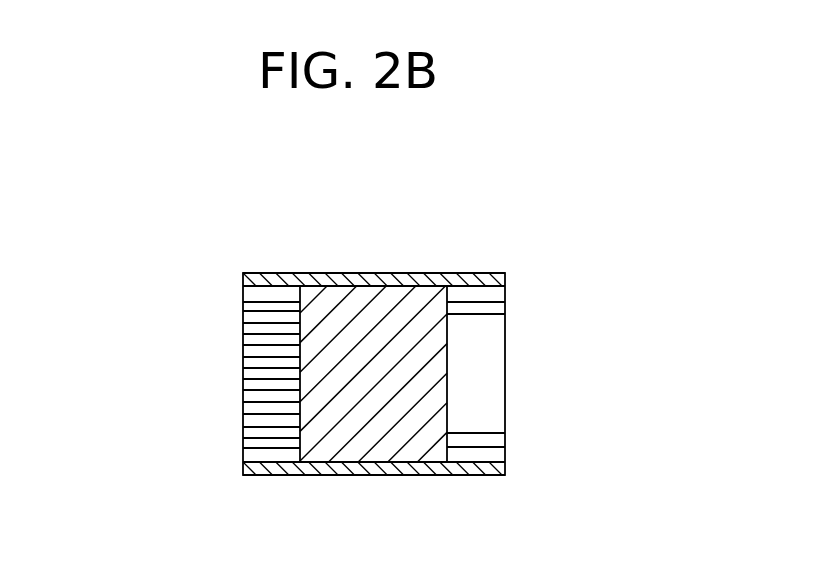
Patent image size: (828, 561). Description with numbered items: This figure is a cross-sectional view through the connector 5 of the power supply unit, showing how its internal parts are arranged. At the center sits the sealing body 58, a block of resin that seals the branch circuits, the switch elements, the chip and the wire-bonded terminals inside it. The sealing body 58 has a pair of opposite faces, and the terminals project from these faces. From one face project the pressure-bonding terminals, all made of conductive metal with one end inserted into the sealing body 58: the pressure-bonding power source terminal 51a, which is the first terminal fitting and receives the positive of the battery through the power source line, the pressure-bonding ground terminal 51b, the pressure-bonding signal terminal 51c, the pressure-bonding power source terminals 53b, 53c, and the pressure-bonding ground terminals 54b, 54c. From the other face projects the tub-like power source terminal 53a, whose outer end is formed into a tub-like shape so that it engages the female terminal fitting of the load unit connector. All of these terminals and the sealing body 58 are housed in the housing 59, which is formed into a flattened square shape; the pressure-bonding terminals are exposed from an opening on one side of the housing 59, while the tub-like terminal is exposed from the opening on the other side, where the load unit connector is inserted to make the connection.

The connector 5 is at (527, 218).
The pressure-bonding power source terminal 51a is at (243, 304).
The pressure-bonding ground terminal 51b is at (243, 328).
The pressure-bonding signal terminal 51c is at (243, 352).
The tub-like power source terminal 53a is at (482, 308).
The pressure-bonding power source terminal 53b is at (243, 373).
The pressure-bonding power source terminal 53c is at (243, 420).
The pressure-bonding ground terminal 54b is at (243, 397).
The pressure-bonding ground terminal 54c is at (243, 445).
The sealing body 58 is at (372, 302).
The housing 59 is at (455, 282).